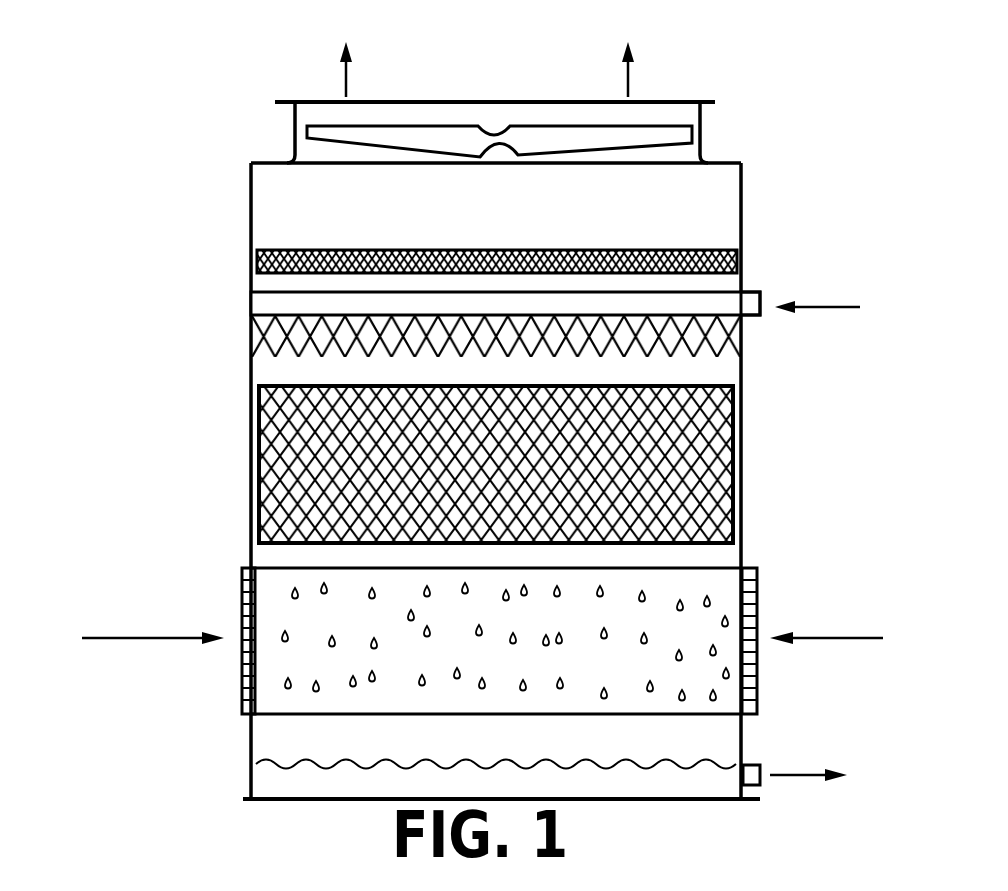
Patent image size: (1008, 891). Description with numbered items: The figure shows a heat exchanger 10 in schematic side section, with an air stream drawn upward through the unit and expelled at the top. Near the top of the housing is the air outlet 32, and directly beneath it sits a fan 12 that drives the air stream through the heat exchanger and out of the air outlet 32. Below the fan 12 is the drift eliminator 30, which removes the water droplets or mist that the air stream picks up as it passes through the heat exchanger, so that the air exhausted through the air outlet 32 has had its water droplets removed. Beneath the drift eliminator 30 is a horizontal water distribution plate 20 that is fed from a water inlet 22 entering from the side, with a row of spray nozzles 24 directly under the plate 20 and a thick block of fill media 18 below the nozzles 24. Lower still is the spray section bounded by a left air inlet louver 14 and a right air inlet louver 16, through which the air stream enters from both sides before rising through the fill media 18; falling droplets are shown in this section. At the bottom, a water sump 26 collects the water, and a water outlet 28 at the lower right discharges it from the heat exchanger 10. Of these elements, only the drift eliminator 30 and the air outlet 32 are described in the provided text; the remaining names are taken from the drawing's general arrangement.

The cooling tower 10 is at (98, 117).
The fan 12 is at (423, 133).
The left air inlet louver 14 is at (243, 604).
The right air inlet louver 16 is at (760, 607).
The fill media 18 is at (288, 442).
The water distribution plate 20 is at (717, 308).
The water inlet 22 is at (763, 314).
The spray nozzles 24 is at (255, 333).
The water sump 26 is at (300, 782).
The water outlet 28 is at (762, 768).
The drift eliminator 30 is at (287, 250).
The air outlet 32 is at (653, 101).